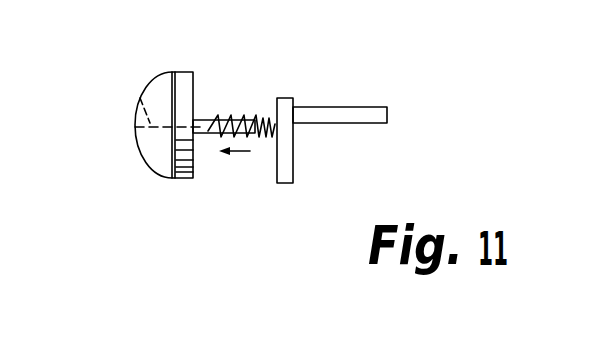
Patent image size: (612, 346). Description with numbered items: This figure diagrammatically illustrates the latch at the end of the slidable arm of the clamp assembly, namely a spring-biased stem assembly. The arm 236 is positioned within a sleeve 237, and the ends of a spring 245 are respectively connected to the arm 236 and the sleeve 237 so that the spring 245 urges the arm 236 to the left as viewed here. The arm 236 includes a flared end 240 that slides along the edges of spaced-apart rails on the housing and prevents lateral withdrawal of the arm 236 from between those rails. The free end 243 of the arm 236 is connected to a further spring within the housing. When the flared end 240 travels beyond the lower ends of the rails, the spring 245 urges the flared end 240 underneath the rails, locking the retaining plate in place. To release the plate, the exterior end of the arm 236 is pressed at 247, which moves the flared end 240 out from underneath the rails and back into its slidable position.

The arm 236 is at (140, 98).
The sleeve 237 is at (199, 134).
The flared end 240 is at (288, 167).
The free end 243 is at (365, 106).
The spring 245 is at (220, 117).
The pressing location 247 is at (147, 158).